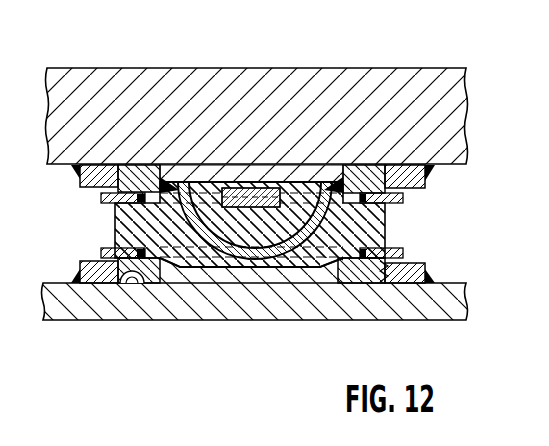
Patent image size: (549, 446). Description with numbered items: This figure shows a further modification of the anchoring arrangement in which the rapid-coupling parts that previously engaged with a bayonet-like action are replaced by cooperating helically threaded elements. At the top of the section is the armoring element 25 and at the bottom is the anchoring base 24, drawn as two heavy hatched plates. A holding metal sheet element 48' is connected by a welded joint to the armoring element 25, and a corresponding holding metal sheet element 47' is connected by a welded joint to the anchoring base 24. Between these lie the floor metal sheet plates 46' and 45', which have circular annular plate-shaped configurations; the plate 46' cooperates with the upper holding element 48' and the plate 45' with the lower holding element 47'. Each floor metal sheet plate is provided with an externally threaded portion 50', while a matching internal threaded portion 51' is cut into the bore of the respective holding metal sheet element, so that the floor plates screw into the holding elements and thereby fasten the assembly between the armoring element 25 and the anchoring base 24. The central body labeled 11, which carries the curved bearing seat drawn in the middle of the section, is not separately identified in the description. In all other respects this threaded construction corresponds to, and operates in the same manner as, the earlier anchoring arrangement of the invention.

The armoring element 25 is at (128, 86).
The anchoring base 24 is at (423, 310).
The spacer body 11 is at (108, 226).
The floor metal sheet plate 46' is at (251, 110).
The holding metal sheet element 48' is at (428, 192).
The holding metal sheet element 47' is at (428, 261).
The floor metal sheet plate 45' is at (274, 310).
The externally threaded portion 50' is at (94, 310).
The internal threaded portion 51' is at (147, 308).